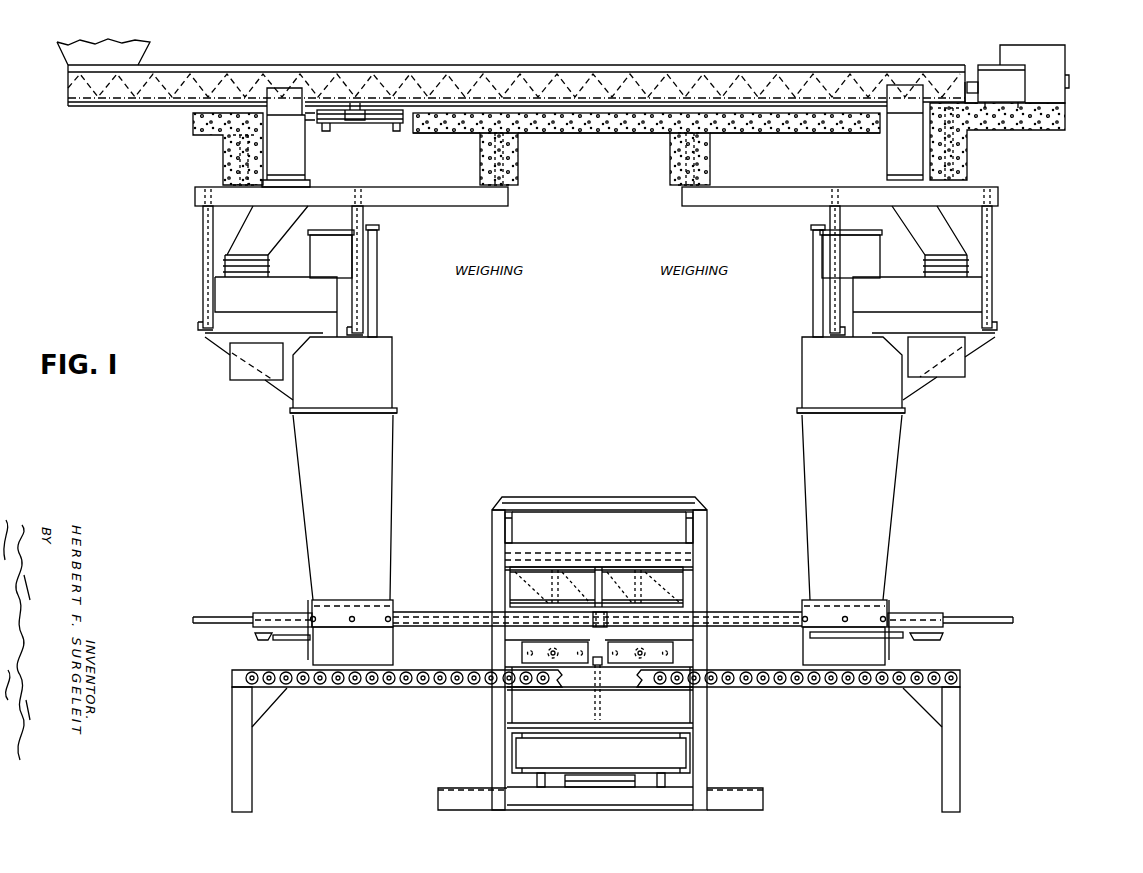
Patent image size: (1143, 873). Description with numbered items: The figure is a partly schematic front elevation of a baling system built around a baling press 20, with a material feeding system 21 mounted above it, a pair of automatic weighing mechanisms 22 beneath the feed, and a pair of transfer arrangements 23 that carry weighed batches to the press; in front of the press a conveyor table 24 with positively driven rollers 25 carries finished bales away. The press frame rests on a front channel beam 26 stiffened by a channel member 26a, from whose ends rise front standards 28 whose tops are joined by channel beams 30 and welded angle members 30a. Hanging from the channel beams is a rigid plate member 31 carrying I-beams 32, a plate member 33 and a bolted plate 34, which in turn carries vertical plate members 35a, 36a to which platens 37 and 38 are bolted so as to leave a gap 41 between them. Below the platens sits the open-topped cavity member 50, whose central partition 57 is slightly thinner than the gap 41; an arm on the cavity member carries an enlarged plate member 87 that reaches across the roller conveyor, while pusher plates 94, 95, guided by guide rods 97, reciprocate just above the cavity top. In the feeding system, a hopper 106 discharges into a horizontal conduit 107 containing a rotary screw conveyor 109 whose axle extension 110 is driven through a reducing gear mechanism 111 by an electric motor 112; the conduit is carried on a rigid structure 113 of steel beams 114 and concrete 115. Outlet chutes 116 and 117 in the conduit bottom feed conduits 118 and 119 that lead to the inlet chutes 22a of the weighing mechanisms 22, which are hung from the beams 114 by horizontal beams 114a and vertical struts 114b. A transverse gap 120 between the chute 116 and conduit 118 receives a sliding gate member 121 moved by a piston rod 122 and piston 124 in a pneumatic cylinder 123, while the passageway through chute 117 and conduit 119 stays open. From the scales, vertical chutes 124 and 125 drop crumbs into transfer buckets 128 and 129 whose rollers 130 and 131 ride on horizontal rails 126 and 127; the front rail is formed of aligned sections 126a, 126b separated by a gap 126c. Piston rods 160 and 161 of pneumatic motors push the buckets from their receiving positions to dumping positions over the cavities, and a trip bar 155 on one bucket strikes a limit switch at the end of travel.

The baling press 20 is at (657, 474).
The material feeding system 21 is at (170, 108).
The automatic scale or weighing mechanism 22 is at (385, 290).
The inlet chute 22a is at (233, 276).
The transfer arrangement 23 is at (399, 543).
The conveyor table 24 is at (378, 688).
The positively driven roller 25 is at (334, 688).
The front horizontal channel beam 26 is at (761, 797).
The channel member 26a is at (560, 806).
The front standard 28 is at (493, 722).
The channel beam 30 is at (509, 523).
The welded angle member 30a is at (540, 497).
The rigid plate member 31 is at (508, 553).
The I-beam 32 is at (686, 555).
The plate member 33 is at (590, 571).
The plate 34 is at (656, 576).
The vertical plate member 35a is at (512, 577).
The vertical plate member 36a is at (684, 578).
The platen 37 is at (526, 601).
The platen 38 is at (684, 603).
The gap 41 is at (599, 585).
The cavity structure or member 50 is at (681, 712).
The central partition 57 is at (605, 713).
The enlarged bar or plate member 87 is at (590, 670).
The pusher plate 94 is at (525, 655).
The pusher plate 95 is at (675, 650).
The guide rod 97 is at (621, 668).
The hopper 106 is at (58, 48).
The trough or conduit 107 is at (556, 64).
The rotary screw conveyor 109 is at (178, 66).
The axle extension 110 is at (972, 82).
The reducing gear mechanism 111 is at (1000, 97).
The electric motor 112 is at (1066, 62).
The rigid structure 113 is at (586, 135).
The steel beam 114 is at (240, 148).
The horizontal beam 114a is at (448, 207).
The vertical strut or frame member 114b is at (204, 250).
The concrete 115 is at (800, 130).
The outlet chute 116 is at (310, 110).
The outlet chute 117 is at (905, 103).
The conduit 118 is at (318, 190).
The conduit 119 is at (913, 158).
The transverse gap 120 is at (288, 125).
The sliding valve or gate member 121 is at (272, 105).
The piston rod 122 is at (348, 109).
The double-acting pneumatic cylinder 123 is at (378, 133).
The vertical chute 124 is at (373, 108).
The vertical chute 125 is at (893, 448).
The horizontal rail or track 126 is at (936, 612).
The rail section 126a is at (401, 618).
The rail section 126b is at (796, 616).
The gap 126c is at (595, 627).
The horizontal rail or track 127 is at (607, 622).
The transfer bucket 128 is at (385, 650).
The transfer bucket 129 is at (805, 648).
The rollers or wheels 130 is at (355, 625).
The rollers or wheels 131 is at (852, 638).
The trip bar 155 is at (253, 641).
The piston rod 160 is at (225, 617).
The piston rod 161 is at (1000, 617).